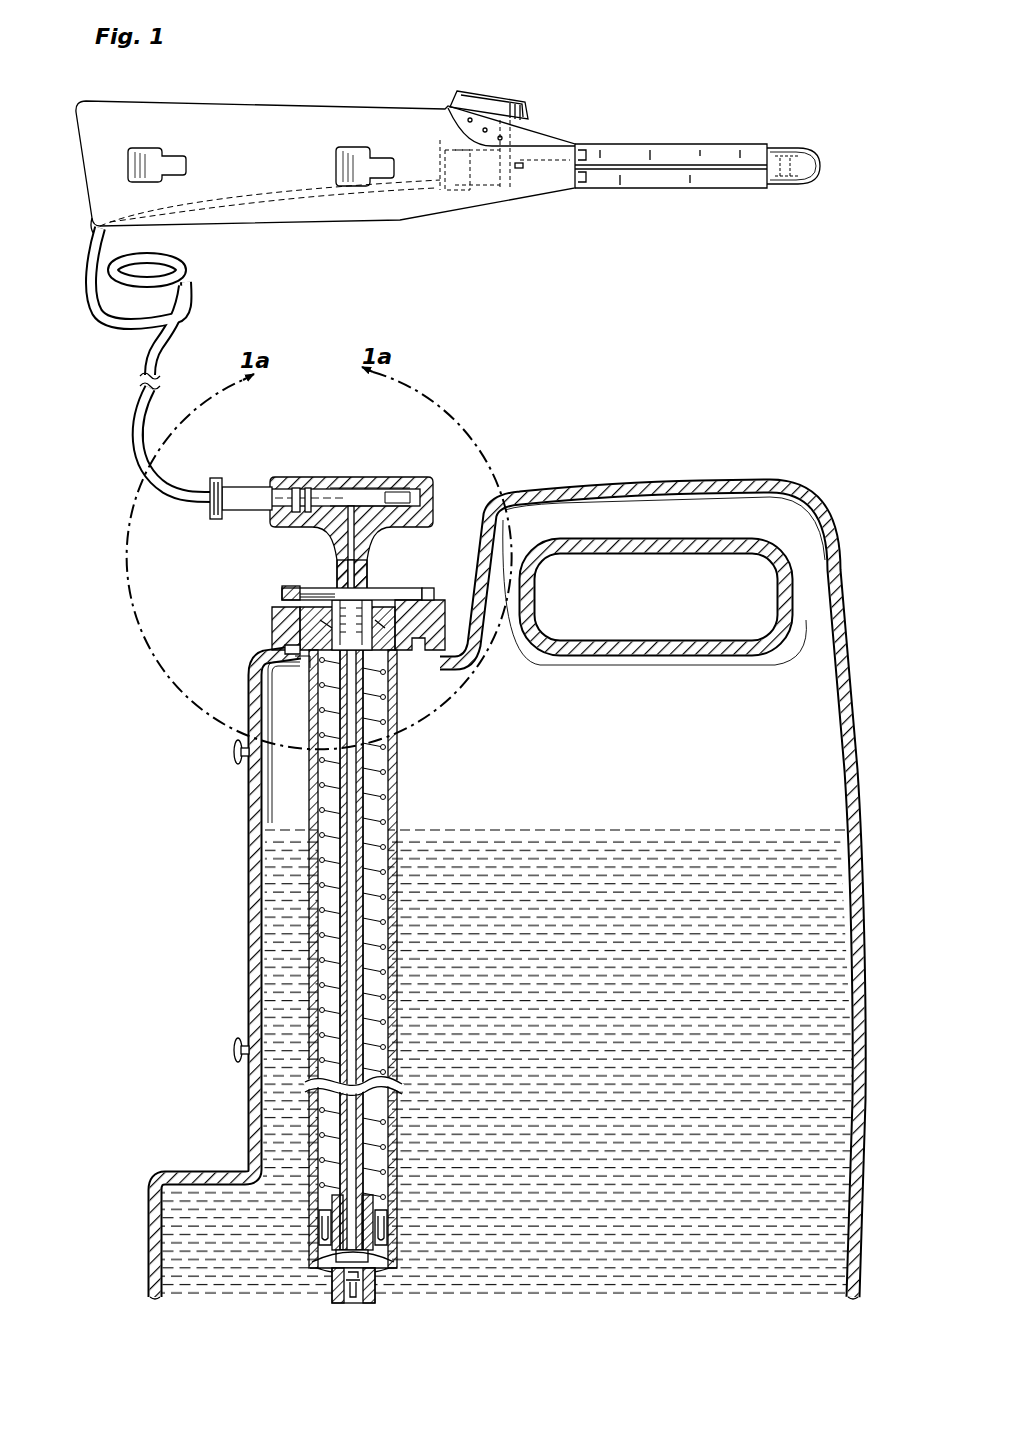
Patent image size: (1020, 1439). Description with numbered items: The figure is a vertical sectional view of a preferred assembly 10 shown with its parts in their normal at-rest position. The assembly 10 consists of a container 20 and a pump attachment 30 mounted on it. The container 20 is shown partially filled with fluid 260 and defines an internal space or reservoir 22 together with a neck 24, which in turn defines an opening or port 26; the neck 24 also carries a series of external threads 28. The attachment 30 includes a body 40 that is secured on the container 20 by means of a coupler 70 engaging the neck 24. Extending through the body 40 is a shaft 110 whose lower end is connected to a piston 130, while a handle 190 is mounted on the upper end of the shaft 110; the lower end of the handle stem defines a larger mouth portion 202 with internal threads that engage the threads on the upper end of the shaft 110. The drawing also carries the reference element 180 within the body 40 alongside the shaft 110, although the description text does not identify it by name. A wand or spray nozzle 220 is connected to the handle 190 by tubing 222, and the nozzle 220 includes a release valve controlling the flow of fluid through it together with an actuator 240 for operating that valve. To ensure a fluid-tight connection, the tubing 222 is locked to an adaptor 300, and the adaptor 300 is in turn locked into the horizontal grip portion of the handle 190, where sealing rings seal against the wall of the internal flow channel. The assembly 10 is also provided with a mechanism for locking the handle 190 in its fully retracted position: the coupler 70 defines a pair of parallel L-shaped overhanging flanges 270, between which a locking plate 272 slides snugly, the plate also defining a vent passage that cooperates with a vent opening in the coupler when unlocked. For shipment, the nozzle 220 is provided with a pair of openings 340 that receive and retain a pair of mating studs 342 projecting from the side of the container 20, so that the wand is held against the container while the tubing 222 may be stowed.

The assembly 10 is at (808, 466).
The container 20 is at (531, 892).
The internal space or reservoir 22 is at (398, 790).
The neck 24 is at (274, 634).
The opening or port 26 is at (310, 662).
The external threads 28 is at (290, 650).
The pump attachment 30 is at (319, 951).
The body 40 is at (395, 770).
The coupler 70 is at (440, 600).
The shaft 110 is at (312, 770).
The piston 130 is at (316, 1200).
The spring 180 is at (322, 862).
The handle 190 is at (352, 482).
The mouth portion 202 is at (300, 597).
The wand or spray nozzle 220 is at (795, 150).
The tubing 222 is at (135, 437).
The actuator 240 is at (497, 100).
The fluid 260 is at (578, 832).
The L-shaped overhanging flanges 270 is at (320, 592).
The locking plate 272 is at (286, 590).
The adaptor 300 is at (242, 480).
The openings 340 is at (145, 150).
The mating studs 342 is at (234, 752).